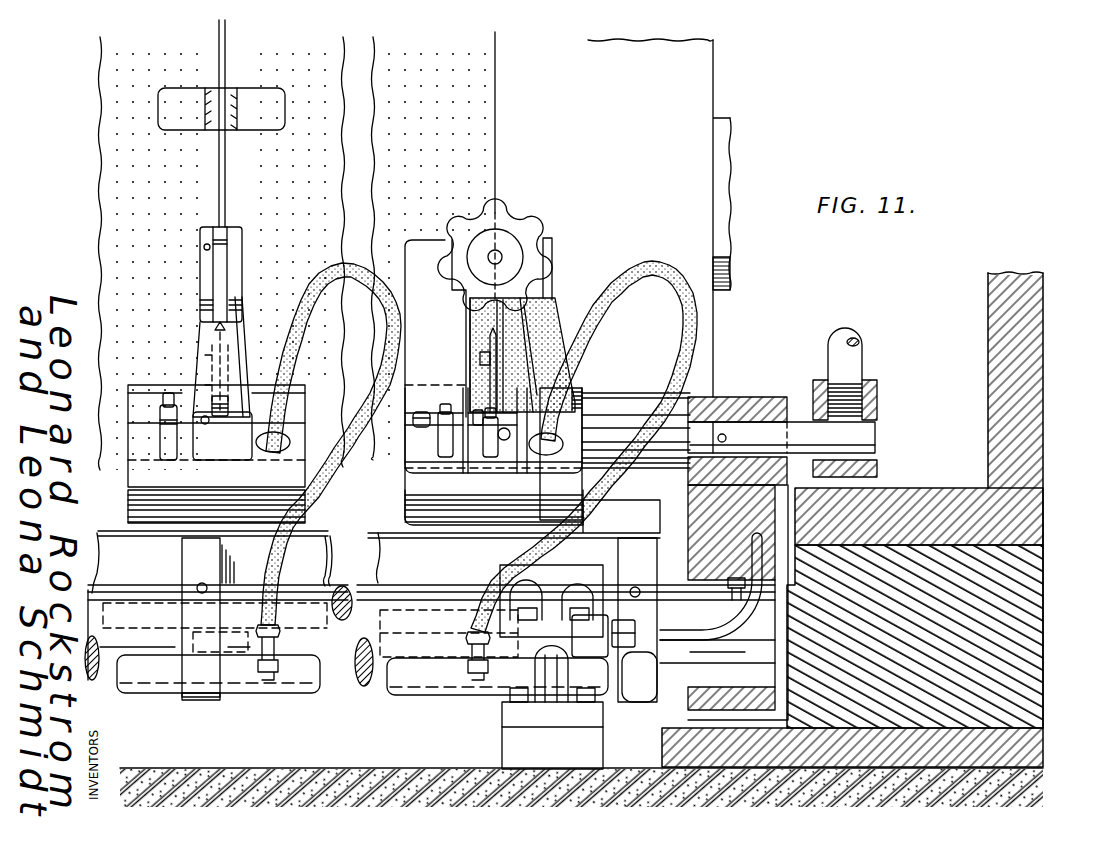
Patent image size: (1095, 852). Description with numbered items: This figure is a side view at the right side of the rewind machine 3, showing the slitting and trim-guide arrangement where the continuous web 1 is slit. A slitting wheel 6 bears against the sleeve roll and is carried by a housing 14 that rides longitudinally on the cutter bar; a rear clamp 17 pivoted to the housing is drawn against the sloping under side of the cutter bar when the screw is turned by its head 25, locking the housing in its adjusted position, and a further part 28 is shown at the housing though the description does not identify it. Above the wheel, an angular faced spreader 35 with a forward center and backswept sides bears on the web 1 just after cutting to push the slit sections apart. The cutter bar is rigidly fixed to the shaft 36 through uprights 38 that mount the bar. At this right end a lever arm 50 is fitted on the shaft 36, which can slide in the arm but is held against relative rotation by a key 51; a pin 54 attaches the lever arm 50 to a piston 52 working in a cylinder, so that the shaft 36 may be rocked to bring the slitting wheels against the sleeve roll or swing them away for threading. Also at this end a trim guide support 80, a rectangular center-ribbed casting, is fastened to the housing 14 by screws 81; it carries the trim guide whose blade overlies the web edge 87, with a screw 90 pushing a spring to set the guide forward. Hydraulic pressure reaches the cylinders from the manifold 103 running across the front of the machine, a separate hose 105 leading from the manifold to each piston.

The continuous web 1 is at (495, 102).
The rewind machine 3 is at (1035, 448).
The slitting wheel 6 is at (485, 340).
The housing 14 is at (128, 480).
The rear clamp 17 is at (193, 641).
The head 25 is at (220, 438).
The bolt 28 is at (168, 462).
The angular faced spreader 35 is at (283, 90).
The shaft 36 is at (372, 692).
The upright 38 is at (630, 562).
The lever arm 50 is at (767, 405).
The key 51 is at (711, 592).
The piston 52 is at (852, 360).
The pin 54 is at (860, 440).
The trim guide support 80 is at (458, 351).
The screw 81 is at (422, 412).
The web edge 87 is at (570, 380).
The screw 90 is at (518, 236).
The manifold 103 is at (298, 680).
The hose 105 is at (320, 480).